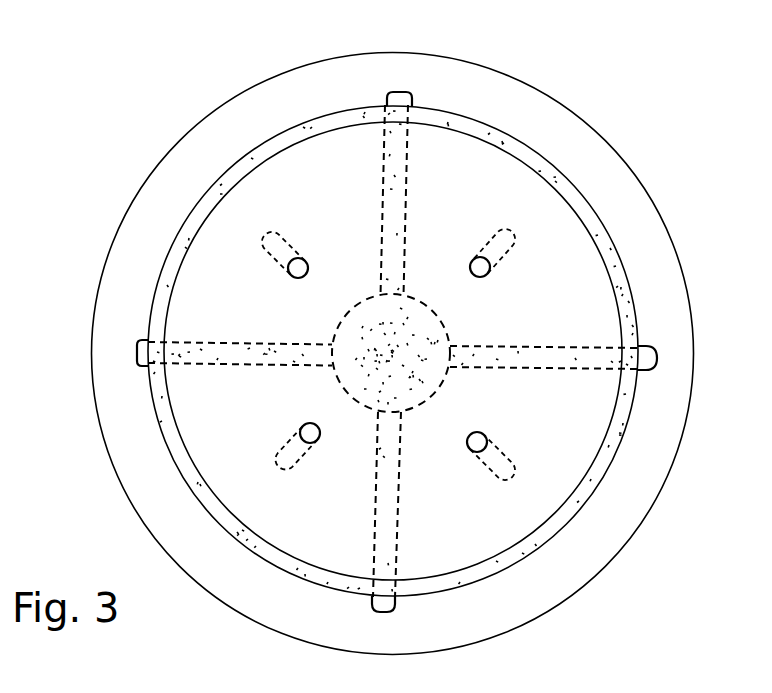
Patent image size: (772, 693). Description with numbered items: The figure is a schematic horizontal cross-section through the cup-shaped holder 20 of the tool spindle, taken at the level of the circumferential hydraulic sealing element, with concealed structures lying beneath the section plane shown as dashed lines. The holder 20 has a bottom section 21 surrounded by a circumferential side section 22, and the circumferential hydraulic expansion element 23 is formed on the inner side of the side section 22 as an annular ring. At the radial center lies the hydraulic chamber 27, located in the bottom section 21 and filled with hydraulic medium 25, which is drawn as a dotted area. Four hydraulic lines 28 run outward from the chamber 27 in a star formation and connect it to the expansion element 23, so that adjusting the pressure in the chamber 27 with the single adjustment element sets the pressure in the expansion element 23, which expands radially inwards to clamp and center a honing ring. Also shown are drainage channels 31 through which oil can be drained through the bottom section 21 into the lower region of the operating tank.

The cup-shaped holder 20 is at (197, 116).
The bottom section 21 is at (548, 485).
The circumferential side section 22 is at (645, 445).
The circumferential hydraulic expansion element 23 is at (615, 260).
The hydraulic medium 25 is at (415, 393).
The hydraulic chamber 27 is at (358, 372).
The hydraulic lines 28 is at (567, 350).
The drainage channels 31 is at (488, 246).